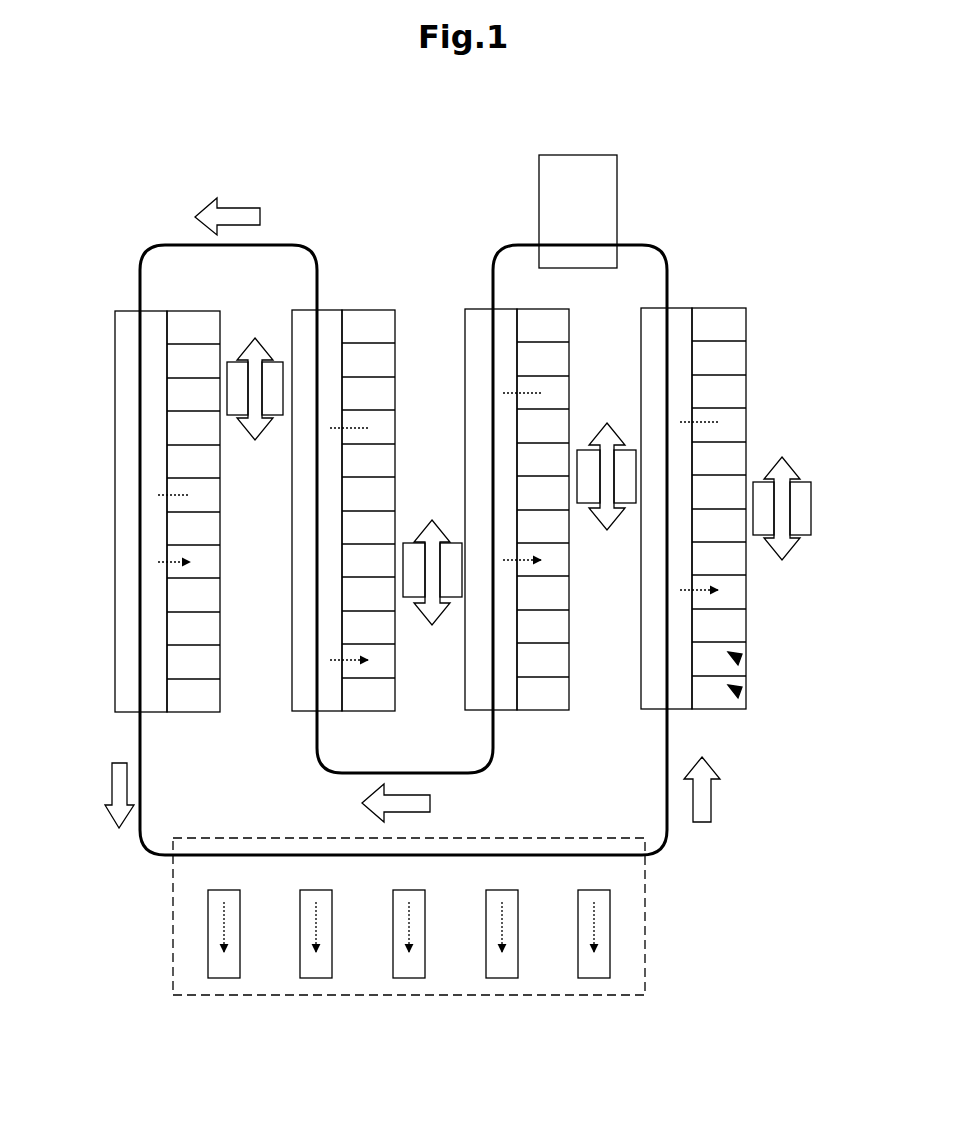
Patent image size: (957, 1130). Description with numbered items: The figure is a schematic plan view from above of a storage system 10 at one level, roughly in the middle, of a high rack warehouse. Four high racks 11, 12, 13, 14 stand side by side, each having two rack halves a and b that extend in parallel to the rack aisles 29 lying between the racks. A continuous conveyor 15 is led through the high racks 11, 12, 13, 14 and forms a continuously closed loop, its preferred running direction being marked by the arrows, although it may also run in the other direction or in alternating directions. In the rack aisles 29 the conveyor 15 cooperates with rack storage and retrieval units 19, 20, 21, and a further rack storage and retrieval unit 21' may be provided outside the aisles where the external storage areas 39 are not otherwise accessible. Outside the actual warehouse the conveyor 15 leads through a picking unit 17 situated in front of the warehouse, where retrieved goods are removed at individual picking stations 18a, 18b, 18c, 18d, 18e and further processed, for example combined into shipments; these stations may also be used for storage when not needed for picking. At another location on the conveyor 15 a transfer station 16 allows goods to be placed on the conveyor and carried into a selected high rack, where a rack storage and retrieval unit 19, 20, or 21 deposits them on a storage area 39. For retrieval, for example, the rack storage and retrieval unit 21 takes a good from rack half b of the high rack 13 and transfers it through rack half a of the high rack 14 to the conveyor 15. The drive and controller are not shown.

The storage system 10 is at (698, 868).
The high rack 11 is at (114, 309).
The high rack 12 is at (345, 308).
The high rack 13 is at (466, 307).
The high rack 14 is at (722, 307).
The conveyor 15 is at (159, 242).
The transfer station 16 is at (602, 167).
The picking unit 17 is at (172, 912).
The picking station 18a is at (223, 982).
The picking station 18b is at (316, 982).
The picking station 18c is at (409, 982).
The picking station 18d is at (502, 982).
The picking station 18e is at (594, 982).
The rack storage and retrieval unit 19 is at (255, 337).
The rack storage and retrieval unit 20 is at (432, 519).
The rack storage and retrieval unit 21 is at (606, 442).
The further rack storage and retrieval unit 21' is at (815, 508).
The rack aisle 29 is at (446, 397).
The storage area 39 is at (748, 660).